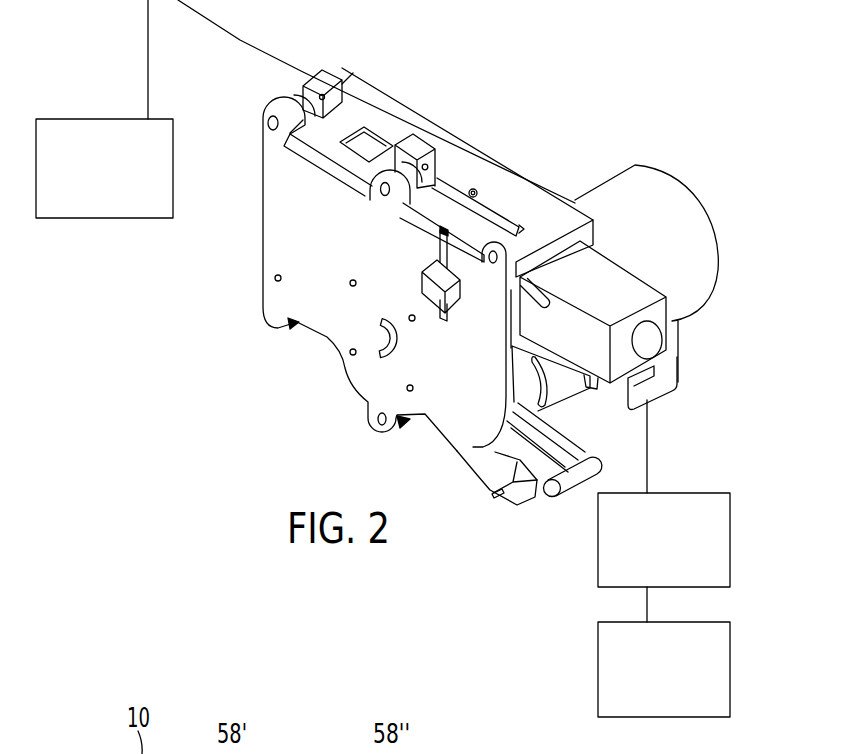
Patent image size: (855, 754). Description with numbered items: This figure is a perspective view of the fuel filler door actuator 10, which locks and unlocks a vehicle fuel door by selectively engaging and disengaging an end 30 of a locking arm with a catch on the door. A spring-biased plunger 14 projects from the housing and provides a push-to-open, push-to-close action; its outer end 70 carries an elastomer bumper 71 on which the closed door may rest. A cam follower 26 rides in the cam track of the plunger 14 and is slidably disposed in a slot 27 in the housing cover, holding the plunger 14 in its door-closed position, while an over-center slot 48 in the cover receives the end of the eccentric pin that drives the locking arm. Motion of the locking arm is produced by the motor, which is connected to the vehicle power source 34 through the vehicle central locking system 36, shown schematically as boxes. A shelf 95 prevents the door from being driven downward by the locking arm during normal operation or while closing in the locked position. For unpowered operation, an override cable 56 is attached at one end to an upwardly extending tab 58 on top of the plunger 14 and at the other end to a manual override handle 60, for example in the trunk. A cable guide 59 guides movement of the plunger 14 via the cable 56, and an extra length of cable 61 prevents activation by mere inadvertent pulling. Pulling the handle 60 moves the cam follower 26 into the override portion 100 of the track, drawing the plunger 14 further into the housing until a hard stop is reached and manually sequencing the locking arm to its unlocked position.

The actuator 10 is at (457, 90).
The plunger 14 is at (619, 303).
The cam follower 26 is at (423, 274).
The slot 27 is at (440, 252).
The end of locking arm 30 is at (517, 505).
The vehicle power source 34 is at (732, 668).
The vehicle central locking system 36 is at (714, 492).
The over-center slot 48 is at (388, 352).
The override cable 56 is at (270, 54).
The upwardly extending tab 58 is at (432, 148).
The cable guide 59 is at (337, 72).
The manual override handle 60 is at (92, 118).
The extra length of cable 61 is at (481, 174).
The end of the plunger 70 is at (662, 332).
The elastomer bumper 71 is at (654, 357).
The shelf 95 is at (455, 458).
The override portion of the track 100 is at (546, 297).